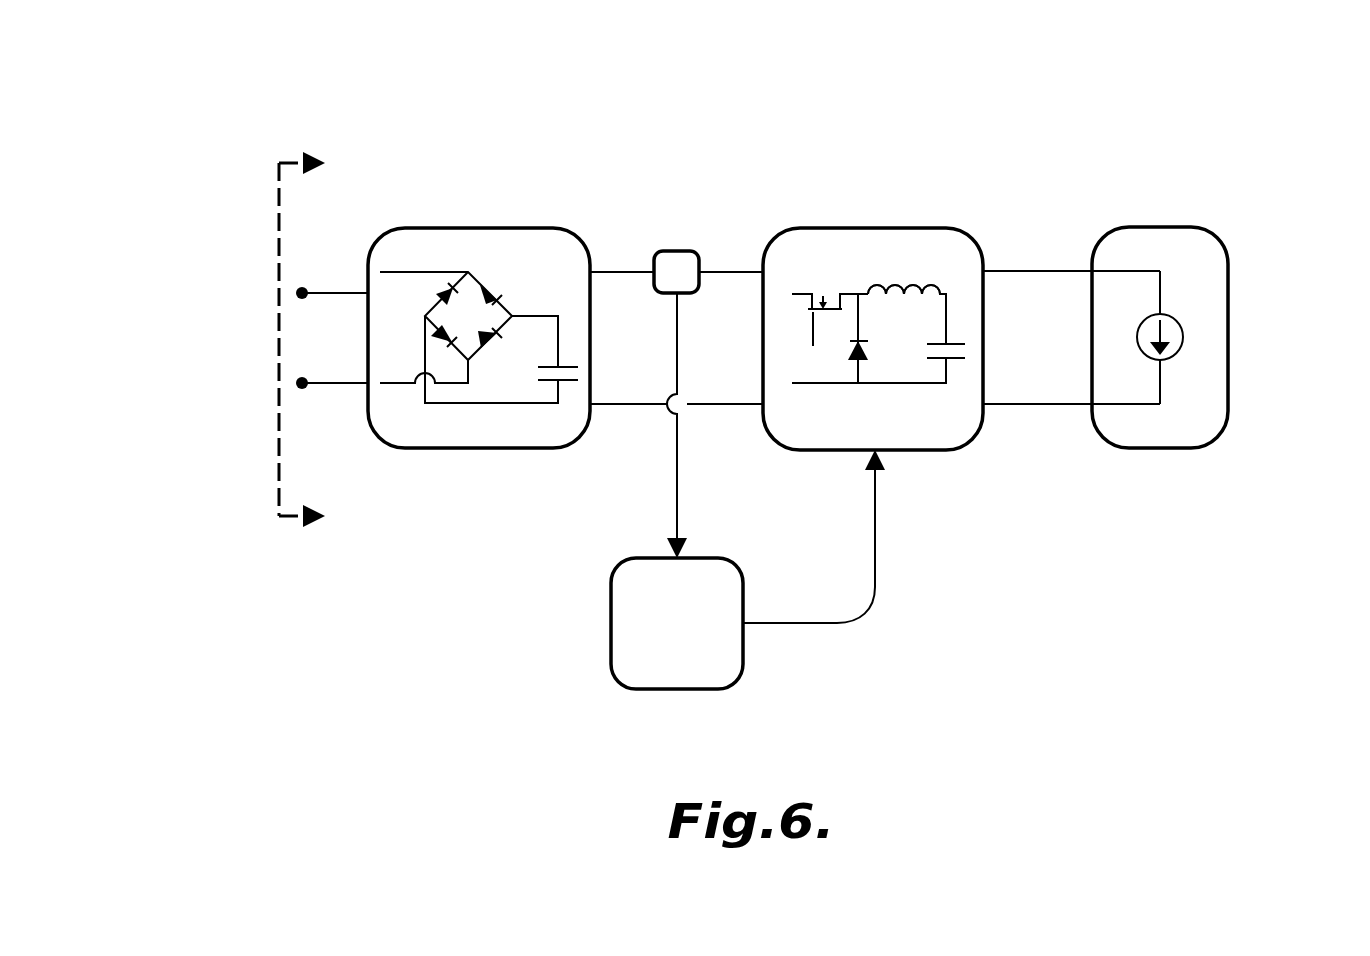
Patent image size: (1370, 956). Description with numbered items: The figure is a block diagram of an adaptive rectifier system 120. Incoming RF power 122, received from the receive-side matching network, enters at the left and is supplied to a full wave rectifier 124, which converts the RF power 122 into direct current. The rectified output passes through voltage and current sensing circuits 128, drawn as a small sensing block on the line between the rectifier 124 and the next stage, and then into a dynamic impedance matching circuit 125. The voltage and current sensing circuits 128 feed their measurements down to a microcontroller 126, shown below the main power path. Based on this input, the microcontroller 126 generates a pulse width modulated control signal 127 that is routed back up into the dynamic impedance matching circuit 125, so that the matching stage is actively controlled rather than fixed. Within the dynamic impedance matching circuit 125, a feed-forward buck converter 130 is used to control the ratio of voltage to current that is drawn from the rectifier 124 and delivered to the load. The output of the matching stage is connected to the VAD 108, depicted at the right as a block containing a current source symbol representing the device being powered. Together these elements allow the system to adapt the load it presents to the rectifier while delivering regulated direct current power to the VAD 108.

The adaptive rectifier system 120 is at (725, 99).
The RF power 122 is at (279, 238).
The full wave rectifier 124 is at (562, 228).
The dynamic impedance matching circuit 125 is at (962, 227).
The microcontroller 126 is at (618, 563).
The pulse width modulated control signal 127 is at (875, 517).
The voltage and current sensing circuits 128 is at (702, 258).
The feed-forward buck converter 130 is at (900, 284).
The VAD 108 is at (1227, 306).